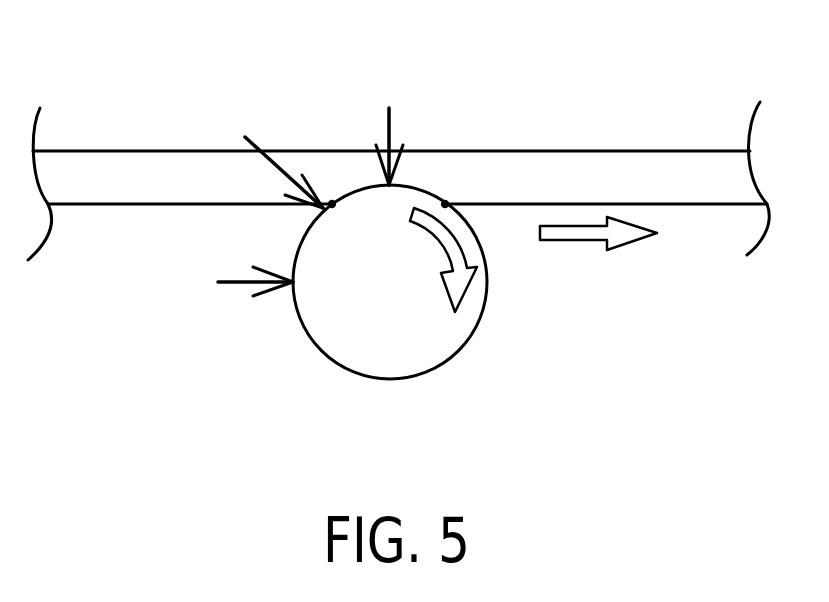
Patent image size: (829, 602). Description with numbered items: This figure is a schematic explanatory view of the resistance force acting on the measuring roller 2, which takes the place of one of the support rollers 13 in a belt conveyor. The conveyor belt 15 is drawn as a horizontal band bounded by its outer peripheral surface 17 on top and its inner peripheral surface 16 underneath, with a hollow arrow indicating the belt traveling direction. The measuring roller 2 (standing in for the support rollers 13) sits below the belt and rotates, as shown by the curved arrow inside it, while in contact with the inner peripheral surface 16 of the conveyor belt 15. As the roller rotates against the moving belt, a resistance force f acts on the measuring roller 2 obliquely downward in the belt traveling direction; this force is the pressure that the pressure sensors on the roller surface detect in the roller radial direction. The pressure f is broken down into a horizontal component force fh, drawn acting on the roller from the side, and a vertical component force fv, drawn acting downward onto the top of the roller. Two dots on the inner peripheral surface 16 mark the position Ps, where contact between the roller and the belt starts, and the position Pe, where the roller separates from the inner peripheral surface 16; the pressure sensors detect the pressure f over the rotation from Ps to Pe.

The conveyor belt 15 is at (398, 173).
The inner peripheral surface 16 is at (125, 205).
The outer peripheral surface 17 is at (135, 150).
The measuring roller 2 is at (436, 331).
The support roller 13 is at (443, 358).
The contact start position Ps is at (332, 204).
The separation position Pe is at (445, 204).
The resistance force f is at (275, 160).
The vertical component force fv is at (389, 130).
The horizontal component force fh is at (237, 284).